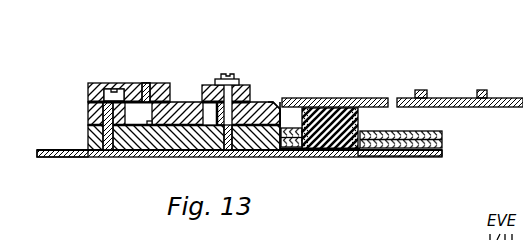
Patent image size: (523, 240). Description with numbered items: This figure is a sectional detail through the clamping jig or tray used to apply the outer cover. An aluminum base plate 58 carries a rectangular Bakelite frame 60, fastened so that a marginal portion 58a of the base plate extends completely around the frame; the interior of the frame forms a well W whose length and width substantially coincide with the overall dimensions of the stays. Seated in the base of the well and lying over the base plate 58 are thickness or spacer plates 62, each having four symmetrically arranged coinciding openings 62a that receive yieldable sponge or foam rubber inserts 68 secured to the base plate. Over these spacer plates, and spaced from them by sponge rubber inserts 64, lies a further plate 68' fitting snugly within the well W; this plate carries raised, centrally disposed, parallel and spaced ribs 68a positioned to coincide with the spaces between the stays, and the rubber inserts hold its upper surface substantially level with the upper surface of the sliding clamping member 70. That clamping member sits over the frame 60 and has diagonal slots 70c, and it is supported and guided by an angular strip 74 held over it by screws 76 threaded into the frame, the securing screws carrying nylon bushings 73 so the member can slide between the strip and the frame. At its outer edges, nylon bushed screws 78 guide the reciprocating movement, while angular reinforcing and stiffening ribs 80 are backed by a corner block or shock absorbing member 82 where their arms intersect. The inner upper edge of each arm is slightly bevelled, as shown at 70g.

The base plate 58 is at (152, 157).
The marginal portion 58a is at (78, 150).
The rectangular frame 60 is at (88, 128).
The sliding clamping member 70 is at (188, 127).
The diagonal slots 70c is at (213, 117).
The bevelled inner upper edge 70g is at (278, 102).
The nylon bushings 73 is at (215, 127).
The angular strip 74 is at (257, 85).
The screws 76 is at (237, 74).
The nylon bushed screws 78 is at (88, 83).
The reinforcing and stiffening ribs 80 is at (158, 83).
The corner block 82 is at (115, 83).
The well W is at (287, 150).
The yieldable inserts 68 is at (335, 83).
The further plate 68' is at (445, 91).
The ribs 68a is at (420, 90).
The sponge rubber inserts 64 is at (360, 122).
The thickness or spacer plates 62 is at (425, 132).
The openings 62a is at (372, 156).